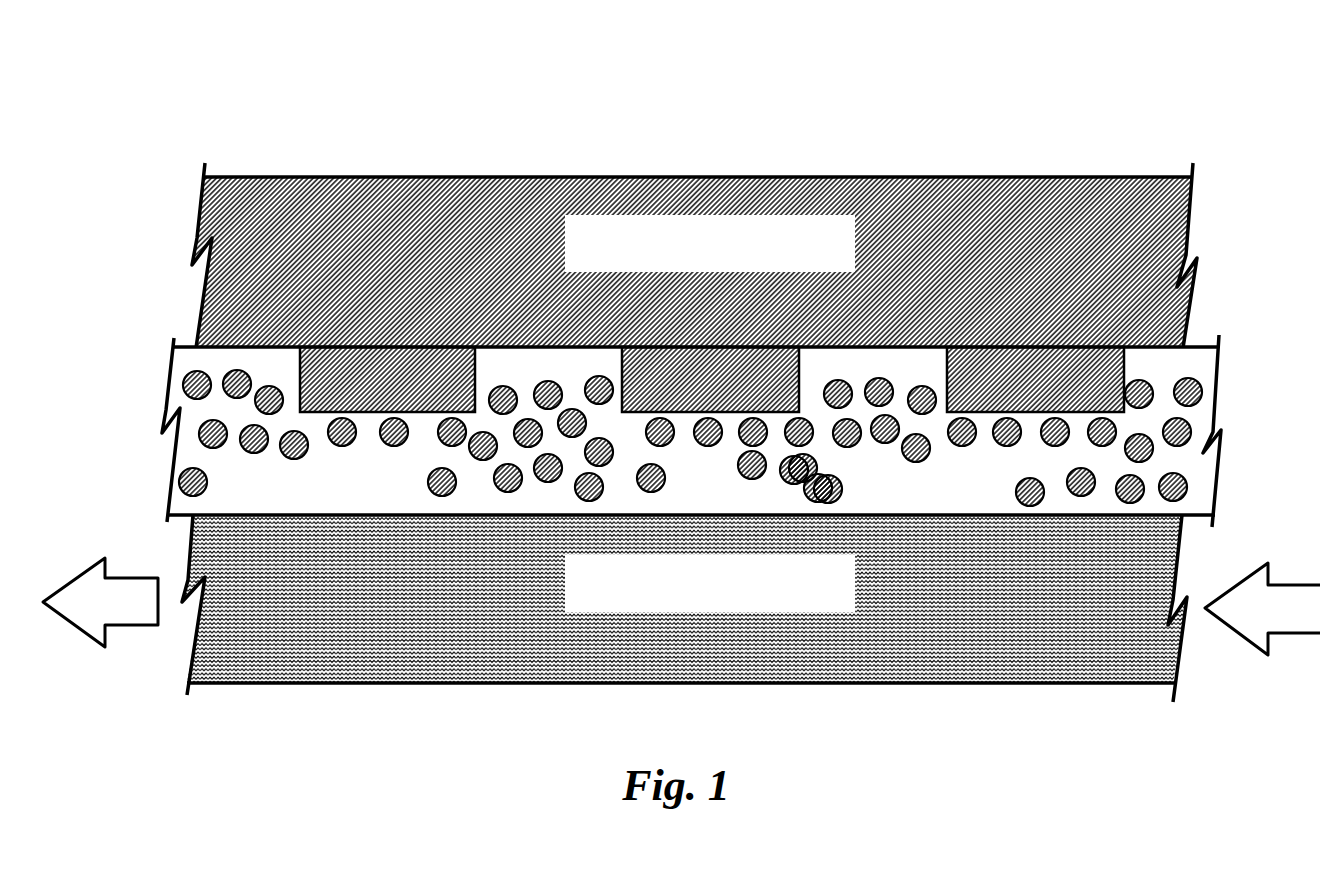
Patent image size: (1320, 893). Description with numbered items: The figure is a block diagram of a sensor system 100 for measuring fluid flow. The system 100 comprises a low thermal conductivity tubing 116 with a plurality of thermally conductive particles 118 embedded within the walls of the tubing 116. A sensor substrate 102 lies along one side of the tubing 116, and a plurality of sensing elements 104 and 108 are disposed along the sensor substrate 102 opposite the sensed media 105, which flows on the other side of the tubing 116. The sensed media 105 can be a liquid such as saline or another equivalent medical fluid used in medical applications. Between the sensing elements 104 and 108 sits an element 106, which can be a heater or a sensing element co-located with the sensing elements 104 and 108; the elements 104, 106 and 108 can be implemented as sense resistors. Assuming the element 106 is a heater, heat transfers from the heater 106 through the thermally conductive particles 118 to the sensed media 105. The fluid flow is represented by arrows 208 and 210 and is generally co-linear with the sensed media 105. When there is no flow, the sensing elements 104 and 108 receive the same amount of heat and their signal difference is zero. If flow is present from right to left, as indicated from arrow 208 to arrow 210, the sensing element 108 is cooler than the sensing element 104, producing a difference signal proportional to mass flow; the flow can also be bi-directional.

The sensor system 100 is at (226, 93).
The sensor substrate 102 is at (694, 317).
The sensing element 104 is at (371, 389).
The sensed media 105 is at (694, 661).
The heater 106 is at (694, 389).
The sensing element 108 is at (1021, 389).
The low thermal conductivity tubing 116 is at (693, 492).
The thermally conductive particles 118 is at (447, 450).
The arrow 208 is at (1272, 621).
The arrow 210 is at (111, 614).